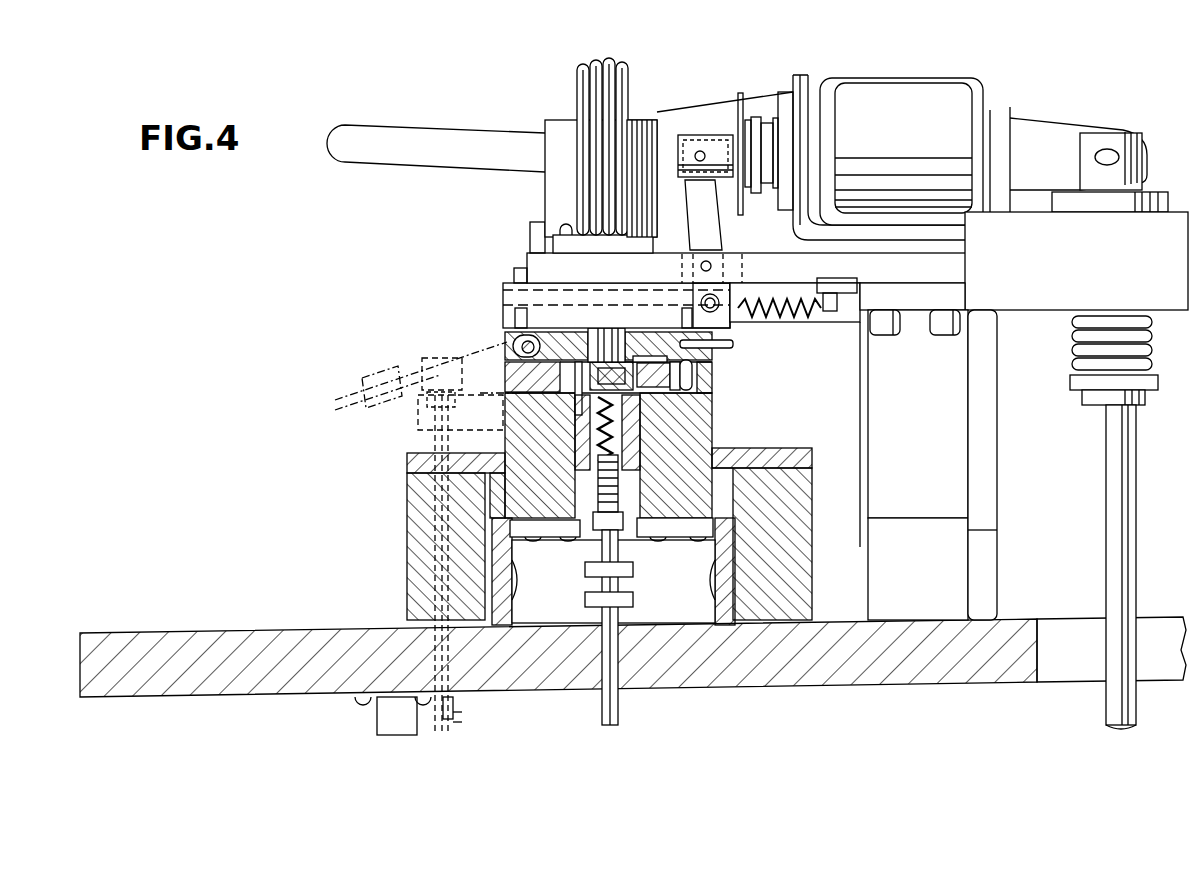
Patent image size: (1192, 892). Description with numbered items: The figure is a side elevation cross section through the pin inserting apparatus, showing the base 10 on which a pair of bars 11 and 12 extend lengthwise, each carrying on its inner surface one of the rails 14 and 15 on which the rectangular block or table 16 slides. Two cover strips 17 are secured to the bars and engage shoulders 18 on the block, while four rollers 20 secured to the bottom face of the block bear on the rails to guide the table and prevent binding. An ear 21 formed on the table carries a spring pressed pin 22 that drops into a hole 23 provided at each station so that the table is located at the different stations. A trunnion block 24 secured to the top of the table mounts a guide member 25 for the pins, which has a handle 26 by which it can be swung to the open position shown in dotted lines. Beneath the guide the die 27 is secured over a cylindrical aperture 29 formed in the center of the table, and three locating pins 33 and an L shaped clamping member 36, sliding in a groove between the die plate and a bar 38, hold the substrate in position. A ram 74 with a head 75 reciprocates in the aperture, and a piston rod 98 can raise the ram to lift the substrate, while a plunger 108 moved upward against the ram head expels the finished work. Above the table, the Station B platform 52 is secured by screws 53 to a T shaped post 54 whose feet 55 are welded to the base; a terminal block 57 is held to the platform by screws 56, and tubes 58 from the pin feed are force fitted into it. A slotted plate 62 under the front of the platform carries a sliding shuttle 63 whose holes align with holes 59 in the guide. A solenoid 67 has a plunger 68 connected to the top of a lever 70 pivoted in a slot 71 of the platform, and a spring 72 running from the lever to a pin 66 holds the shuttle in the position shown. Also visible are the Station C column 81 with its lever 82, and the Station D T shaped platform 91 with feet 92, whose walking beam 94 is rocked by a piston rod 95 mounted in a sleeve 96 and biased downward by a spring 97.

The base 10 is at (245, 633).
The bar 11 is at (805, 500).
The bar 12 is at (408, 512).
The rail 14 is at (720, 614).
The rail 15 is at (508, 614).
The table 16 is at (708, 418).
The cover strips 17 is at (416, 454).
The shoulders 18 is at (715, 470).
The rollers 20 is at (530, 537).
The ear 21 is at (420, 400).
The spring pressed pin 22 is at (425, 358).
The hole 23 is at (430, 462).
The trunnion block 24 is at (522, 398).
The guide member 25 is at (733, 344).
The handle 26 is at (718, 358).
The die 27 is at (582, 415).
The cylindrical aperture 29 is at (642, 405).
The pins 33 is at (545, 398).
The L shaped clamping member 36 is at (700, 378).
The bar 38 is at (694, 388).
The platform 52 is at (536, 263).
The screws 53 is at (947, 335).
The T shaped post 54 is at (932, 406).
The feet 55 is at (932, 581).
The screws 56 is at (568, 208).
The terminal block 57 is at (620, 246).
The tubes 58 is at (608, 62).
The holes 59 is at (593, 332).
The slotted plate 62 is at (528, 298).
The shuttle 63 is at (513, 313).
The pin 66 is at (832, 312).
The solenoid 67 is at (868, 86).
The plunger 68 is at (716, 146).
The lever 70 is at (716, 226).
The slot 71 is at (733, 256).
The spring 72 is at (780, 320).
The ram 74 is at (640, 475).
The head 75 is at (636, 412).
The column 81 is at (860, 388).
The lever 82 is at (405, 135).
The T shaped platform 91 is at (1092, 271).
The feet 92 is at (990, 582).
The walking beam 94 is at (1055, 124).
The piston rod 95 is at (1108, 432).
The sleeve 96 is at (1157, 192).
The spring 97 is at (1076, 344).
The piston rod 98 is at (611, 564).
The plunger 108 is at (635, 600).